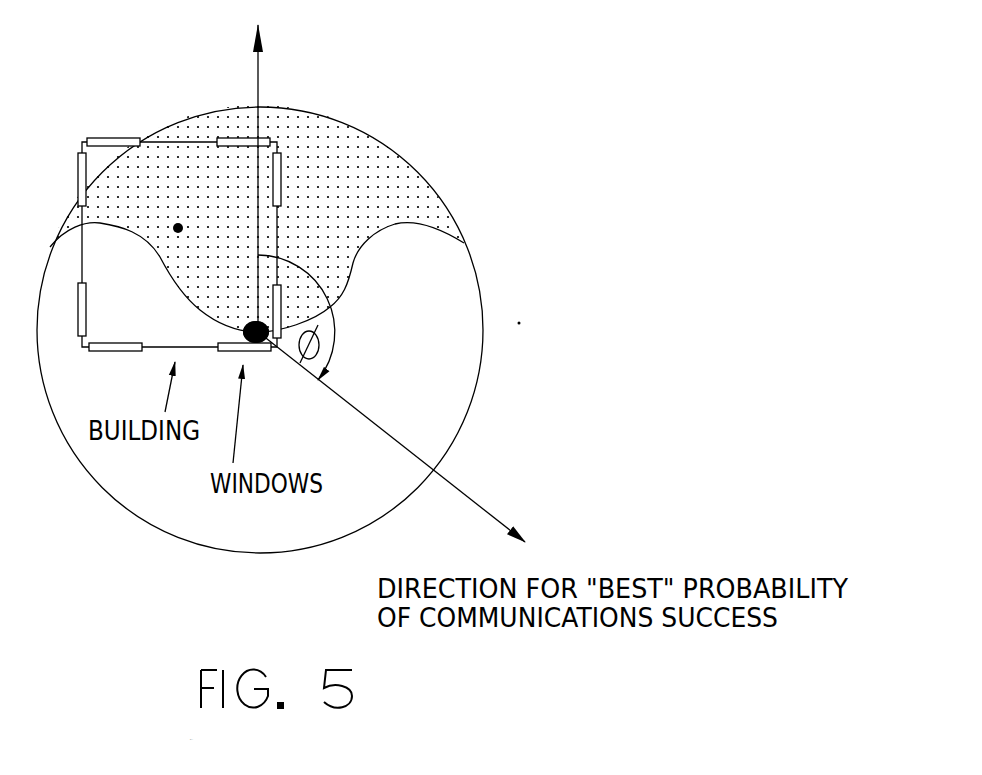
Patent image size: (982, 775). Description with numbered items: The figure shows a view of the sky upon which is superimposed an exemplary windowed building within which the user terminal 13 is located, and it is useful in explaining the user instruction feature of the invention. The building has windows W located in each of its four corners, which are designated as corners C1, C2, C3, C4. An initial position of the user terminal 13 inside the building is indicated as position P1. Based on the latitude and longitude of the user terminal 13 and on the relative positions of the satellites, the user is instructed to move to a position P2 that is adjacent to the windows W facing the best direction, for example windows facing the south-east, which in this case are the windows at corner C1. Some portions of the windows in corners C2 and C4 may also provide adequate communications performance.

The user terminal 13 is at (252, 320).
The corner C1 is at (233, 314).
The corner C2 is at (253, 188).
The corner C3 is at (114, 179).
The corner C4 is at (120, 314).
The windows W is at (167, 232).
The initial position P1 is at (177, 215).
The position P2 is at (241, 322).